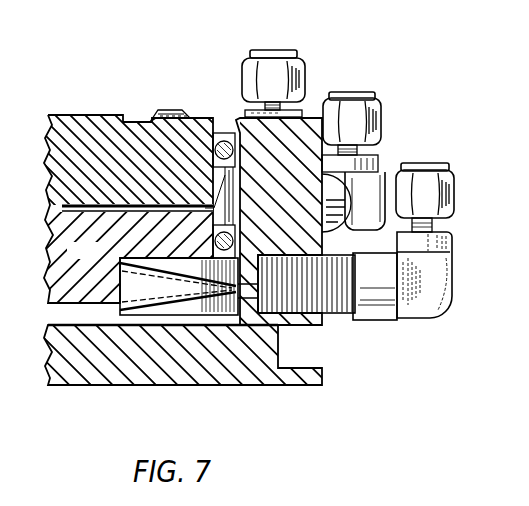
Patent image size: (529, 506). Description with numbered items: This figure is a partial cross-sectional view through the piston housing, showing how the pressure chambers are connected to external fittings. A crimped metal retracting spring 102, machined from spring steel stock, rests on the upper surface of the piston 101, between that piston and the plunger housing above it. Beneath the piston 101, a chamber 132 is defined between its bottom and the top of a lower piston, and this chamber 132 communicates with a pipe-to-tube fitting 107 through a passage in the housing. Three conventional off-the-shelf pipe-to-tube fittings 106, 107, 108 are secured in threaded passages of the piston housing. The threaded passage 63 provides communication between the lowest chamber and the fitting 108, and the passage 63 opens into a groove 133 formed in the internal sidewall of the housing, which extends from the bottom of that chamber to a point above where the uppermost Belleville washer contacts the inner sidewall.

The piston 101 is at (95, 130).
The crimped metal retracting spring 102 is at (160, 112).
The pipe-to-tube fitting 106 is at (300, 62).
The pipe-to-tube fitting 107 is at (375, 162).
The pipe-to-tube fitting 108 is at (440, 272).
The chamber 132 is at (98, 211).
The threaded passage 63 is at (253, 312).
The groove 133 is at (283, 363).